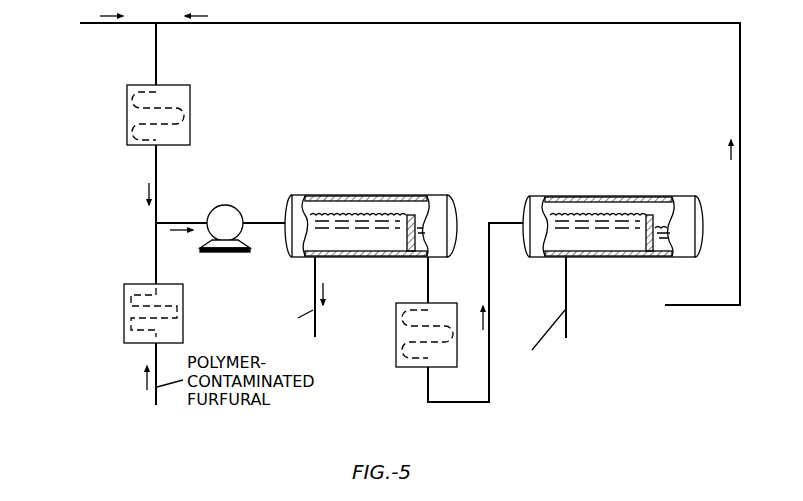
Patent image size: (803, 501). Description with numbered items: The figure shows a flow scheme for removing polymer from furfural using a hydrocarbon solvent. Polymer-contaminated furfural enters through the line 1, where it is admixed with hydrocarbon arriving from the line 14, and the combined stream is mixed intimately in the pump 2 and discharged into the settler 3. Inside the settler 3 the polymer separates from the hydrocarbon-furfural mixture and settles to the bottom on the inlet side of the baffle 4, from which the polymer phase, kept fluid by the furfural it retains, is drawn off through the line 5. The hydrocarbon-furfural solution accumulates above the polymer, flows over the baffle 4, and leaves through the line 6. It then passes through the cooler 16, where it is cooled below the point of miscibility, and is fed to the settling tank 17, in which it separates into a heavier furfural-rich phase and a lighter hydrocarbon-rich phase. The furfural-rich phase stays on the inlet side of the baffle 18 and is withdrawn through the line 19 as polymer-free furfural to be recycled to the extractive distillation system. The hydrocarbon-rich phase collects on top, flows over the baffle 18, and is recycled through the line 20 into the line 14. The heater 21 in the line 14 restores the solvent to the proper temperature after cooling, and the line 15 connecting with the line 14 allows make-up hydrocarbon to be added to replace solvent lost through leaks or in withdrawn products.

The line 1 is at (153, 395).
The mixing pump 2 is at (225, 210).
The settler 3 is at (415, 195).
The baffle 4 is at (407, 228).
The line 5 is at (313, 275).
The line 6 is at (427, 268).
The line 14 is at (153, 167).
The line 15 is at (100, 24).
The cooler 16 is at (396, 330).
The settling tank 17 is at (537, 196).
The baffle 18 is at (646, 225).
The line 19 is at (568, 325).
The line 20 is at (392, 24).
The heater 21 is at (168, 88).